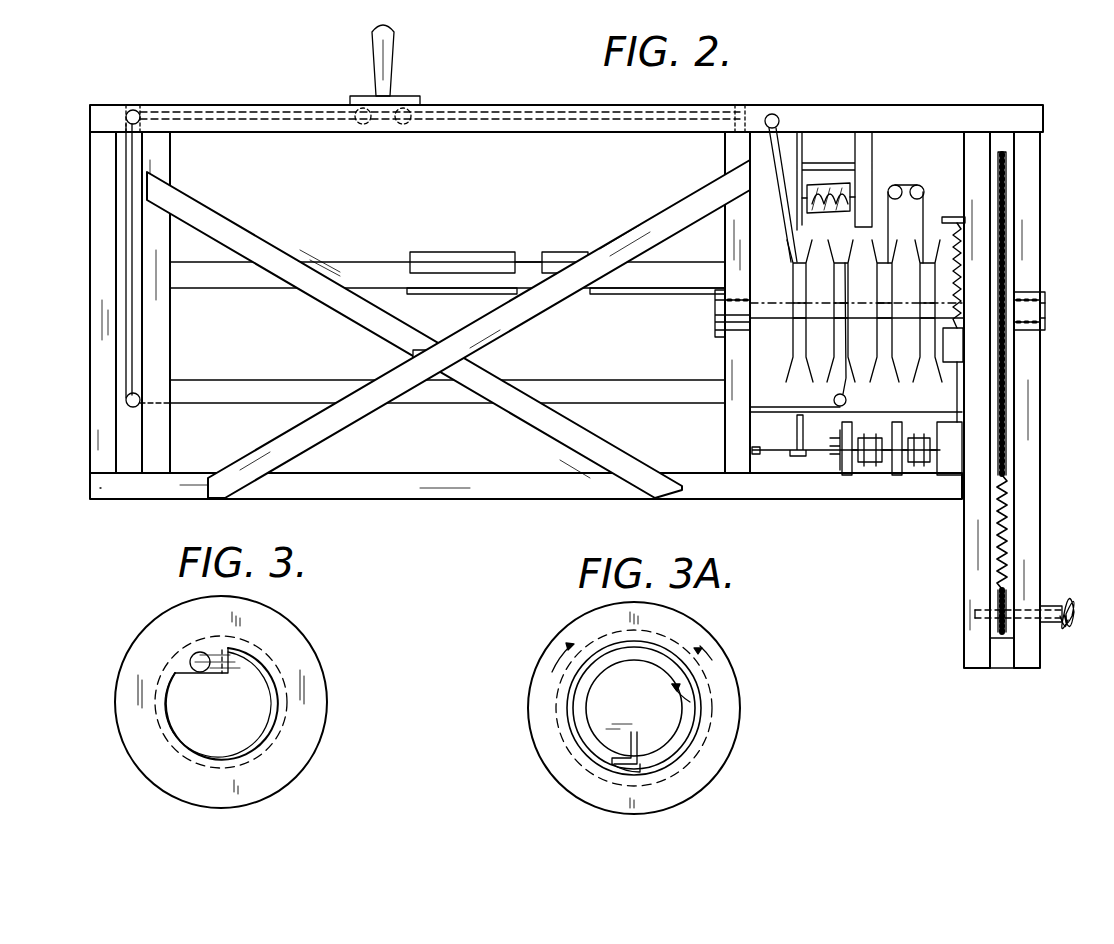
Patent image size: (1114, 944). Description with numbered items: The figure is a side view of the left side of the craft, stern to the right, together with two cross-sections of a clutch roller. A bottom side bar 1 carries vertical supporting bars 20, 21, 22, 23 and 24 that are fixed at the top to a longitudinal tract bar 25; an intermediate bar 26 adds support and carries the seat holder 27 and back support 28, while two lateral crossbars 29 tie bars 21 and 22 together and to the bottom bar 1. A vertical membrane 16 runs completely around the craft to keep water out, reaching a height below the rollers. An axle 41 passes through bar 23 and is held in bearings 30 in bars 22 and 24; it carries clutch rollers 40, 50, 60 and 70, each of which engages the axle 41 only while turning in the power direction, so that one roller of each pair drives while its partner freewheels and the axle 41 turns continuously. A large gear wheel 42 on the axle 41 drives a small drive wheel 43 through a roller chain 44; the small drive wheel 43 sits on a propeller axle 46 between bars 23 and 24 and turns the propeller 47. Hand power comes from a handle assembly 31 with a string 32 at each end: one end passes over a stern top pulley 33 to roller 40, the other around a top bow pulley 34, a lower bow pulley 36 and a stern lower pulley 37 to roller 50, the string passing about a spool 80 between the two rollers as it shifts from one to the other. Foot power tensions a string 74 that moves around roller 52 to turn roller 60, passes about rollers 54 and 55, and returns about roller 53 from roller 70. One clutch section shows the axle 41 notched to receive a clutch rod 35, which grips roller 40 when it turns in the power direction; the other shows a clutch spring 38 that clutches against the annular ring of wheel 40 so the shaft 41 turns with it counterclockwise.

In FIG. 2, the bottom side bar 1 is at (272, 483).
In FIG. 2, the vertical membrane 16 is at (640, 380).
In FIG. 2, the vertical supporting bar 20 is at (100, 460).
In FIG. 2, the vertical supporting bar 21 is at (175, 453).
In FIG. 2, the vertical supporting bar 22 is at (726, 434).
In FIG. 2, the vertical supporting bar 23 is at (996, 458).
In FIG. 2, the vertical supporting bar 24 is at (1034, 448).
In FIG. 2, the longitudinal tract bar 25 is at (564, 368).
In FIG. 2, the intermediate bar 26 is at (447, 277).
In FIG. 2, the seat holder 27 is at (476, 263).
In FIG. 2, the back support 28 is at (569, 263).
In FIG. 2, the lateral crossbars 29 is at (448, 329).
In FIG. 2, the bearings 30 is at (1044, 304).
In FIG. 2, the handle assembly 31 is at (396, 48).
In FIG. 2, the string 32 is at (557, 104).
In FIG. 2, the stern top pulley 33 is at (775, 116).
In FIG. 2, the top bow pulley 34 is at (138, 106).
In FIG. 3, the clutch rod 35 is at (190, 656).
In FIG. 2, the lower bow pulley 36 is at (126, 400).
In FIG. 2, the stern lower pulley 37 is at (846, 366).
In FIG. 3A, the clutch spring 38 is at (610, 762).
In FIG. 2, the clutch roller 40 is at (792, 346).
In FIG. 3, the clutch roller 40 is at (110, 734).
In FIG. 3A, the clutch roller 40 is at (735, 754).
In FIG. 2, the axle 41 is at (773, 318).
In FIG. 3, the axle 41 is at (221, 704).
In FIG. 3A, the axle 41 is at (634, 708).
In FIG. 2, the large gear wheel 42 is at (1012, 222).
In FIG. 2, the small drive wheel 43 is at (1008, 600).
In FIG. 2, the roller chain 44 is at (1006, 528).
In FIG. 2, the propeller axle 46 is at (1050, 623).
In FIG. 2, the propeller 47 is at (1065, 625).
In FIG. 2, the clutch roller 50 is at (840, 342).
In FIG. 2, the roller 52 is at (872, 464).
In FIG. 2, the roller 53 is at (920, 464).
In FIG. 2, the roller 54 is at (893, 186).
In FIG. 2, the roller 55 is at (940, 178).
In FIG. 2, the clutch roller 60 is at (882, 342).
In FIG. 2, the clutch roller 70 is at (925, 342).
In FIG. 2, the string 74 is at (922, 410).
In FIG. 2, the spool 80 is at (842, 184).